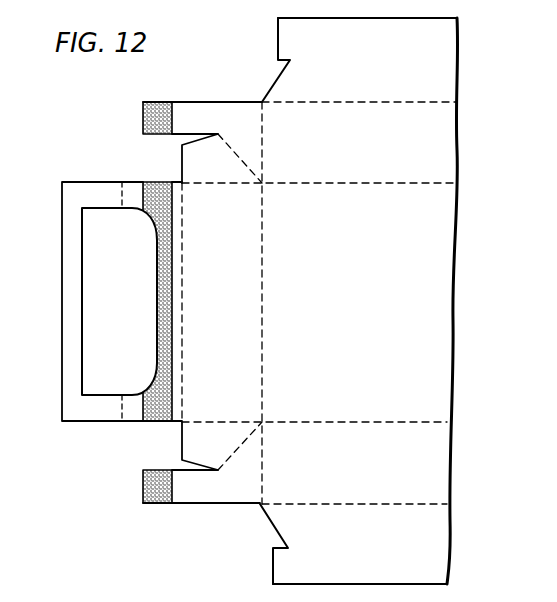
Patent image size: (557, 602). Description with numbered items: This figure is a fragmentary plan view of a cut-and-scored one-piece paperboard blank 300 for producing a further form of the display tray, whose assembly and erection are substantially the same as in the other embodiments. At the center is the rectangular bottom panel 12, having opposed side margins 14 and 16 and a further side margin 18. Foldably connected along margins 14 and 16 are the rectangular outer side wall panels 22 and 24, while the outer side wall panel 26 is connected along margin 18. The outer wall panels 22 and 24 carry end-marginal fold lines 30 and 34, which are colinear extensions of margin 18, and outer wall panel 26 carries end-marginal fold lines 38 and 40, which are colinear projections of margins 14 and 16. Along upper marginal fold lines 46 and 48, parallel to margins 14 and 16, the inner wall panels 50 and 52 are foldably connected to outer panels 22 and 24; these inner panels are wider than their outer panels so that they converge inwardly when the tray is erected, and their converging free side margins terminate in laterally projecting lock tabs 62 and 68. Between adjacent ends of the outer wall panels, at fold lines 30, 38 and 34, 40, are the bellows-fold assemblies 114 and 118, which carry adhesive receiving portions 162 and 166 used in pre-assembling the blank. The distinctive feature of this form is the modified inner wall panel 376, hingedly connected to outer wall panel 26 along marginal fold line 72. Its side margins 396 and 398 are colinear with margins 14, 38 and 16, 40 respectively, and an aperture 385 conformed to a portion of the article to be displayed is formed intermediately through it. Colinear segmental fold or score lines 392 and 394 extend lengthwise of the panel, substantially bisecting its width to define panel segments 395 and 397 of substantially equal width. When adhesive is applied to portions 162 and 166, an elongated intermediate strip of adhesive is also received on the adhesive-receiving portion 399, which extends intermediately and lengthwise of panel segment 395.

The blank 300 is at (480, 82).
The bottom panel 12 is at (369, 299).
The side margin 14 is at (398, 186).
The side margin 16 is at (348, 422).
The side margin 18 is at (262, 296).
The outer side wall panel 22 is at (373, 147).
The outer side wall panel 24 is at (366, 461).
The outer side wall panel 26 is at (210, 302).
The end-marginal fold line 30 is at (262, 140).
The end-marginal fold line 34 is at (262, 462).
The end-marginal fold line 38 is at (228, 182).
The end-marginal fold line 40 is at (228, 424).
The upper marginal fold line 46 is at (395, 105).
The upper marginal fold line 48 is at (370, 504).
The inner wall panel 50 is at (324, 60).
The inner wall panel 52 is at (320, 544).
The lock tab 62 is at (284, 34).
The lock tab 68 is at (275, 561).
The marginal fold line 72 is at (182, 256).
The bellows-fold assembly 114 is at (203, 100).
The bellows-fold assembly 118 is at (220, 505).
The adhesive receiving portion 162 is at (143, 114).
The adhesive receiving portion 166 is at (143, 510).
The inner wall panel 376 is at (105, 425).
The aperture 385 is at (82, 315).
The segmental fold line 392 is at (128, 200).
The segmental fold line 394 is at (133, 410).
The panel segment 395 is at (178, 422).
The side margin 396 is at (100, 182).
The panel segment 397 is at (66, 395).
The side margin 398 is at (76, 422).
The adhesive-receiving portion 399 is at (163, 211).